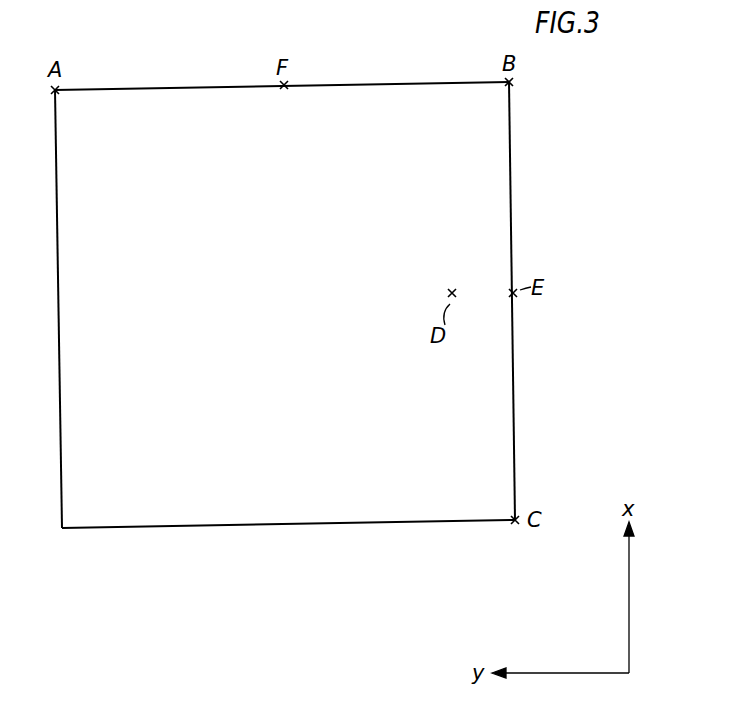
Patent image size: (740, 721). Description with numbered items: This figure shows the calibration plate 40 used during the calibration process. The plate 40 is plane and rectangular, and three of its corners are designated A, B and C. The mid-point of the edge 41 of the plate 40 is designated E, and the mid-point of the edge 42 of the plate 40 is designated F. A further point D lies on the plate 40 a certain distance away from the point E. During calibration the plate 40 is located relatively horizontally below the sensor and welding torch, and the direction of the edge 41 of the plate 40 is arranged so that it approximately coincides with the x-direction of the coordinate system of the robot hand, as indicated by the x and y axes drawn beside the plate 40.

The calibration plate 40 is at (153, 512).
The edge 41 is at (516, 408).
The edge 42 is at (361, 81).